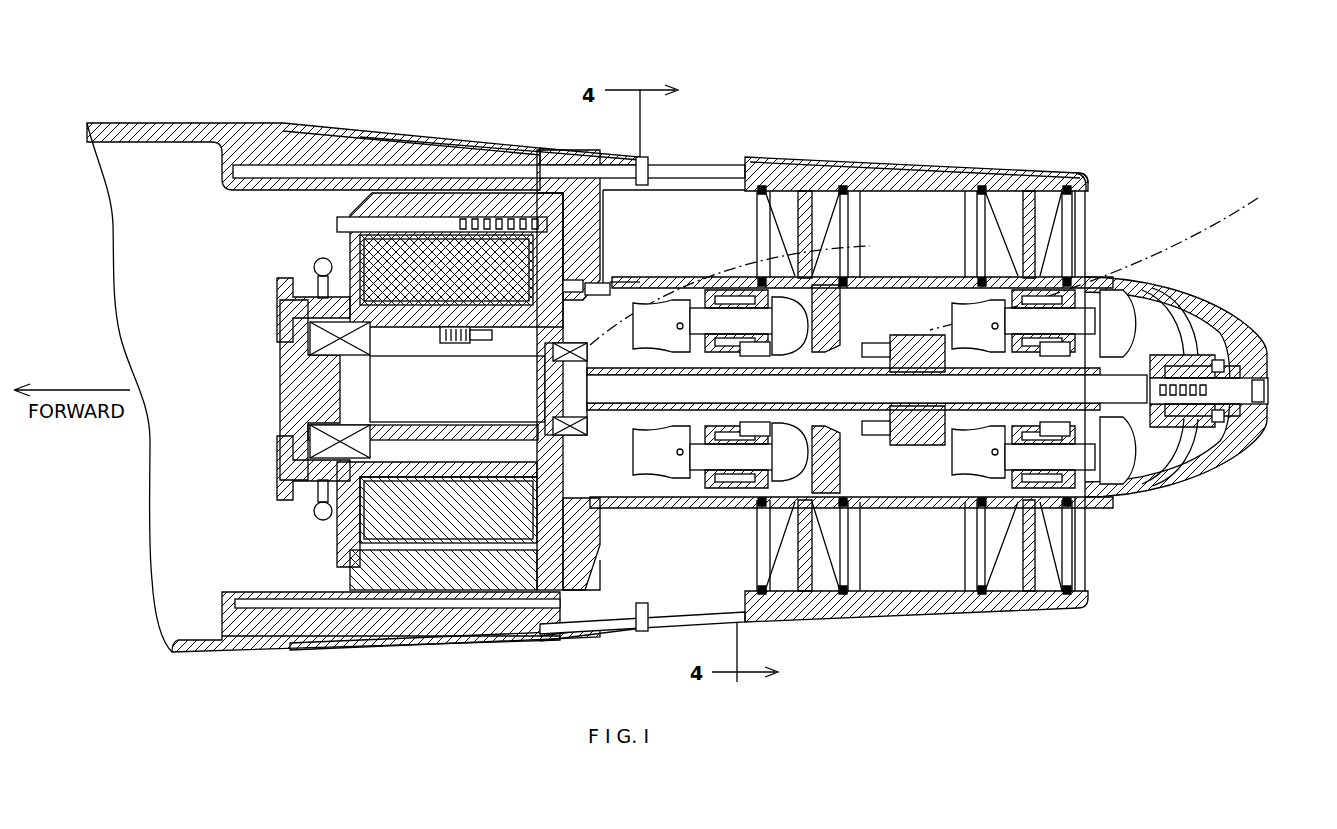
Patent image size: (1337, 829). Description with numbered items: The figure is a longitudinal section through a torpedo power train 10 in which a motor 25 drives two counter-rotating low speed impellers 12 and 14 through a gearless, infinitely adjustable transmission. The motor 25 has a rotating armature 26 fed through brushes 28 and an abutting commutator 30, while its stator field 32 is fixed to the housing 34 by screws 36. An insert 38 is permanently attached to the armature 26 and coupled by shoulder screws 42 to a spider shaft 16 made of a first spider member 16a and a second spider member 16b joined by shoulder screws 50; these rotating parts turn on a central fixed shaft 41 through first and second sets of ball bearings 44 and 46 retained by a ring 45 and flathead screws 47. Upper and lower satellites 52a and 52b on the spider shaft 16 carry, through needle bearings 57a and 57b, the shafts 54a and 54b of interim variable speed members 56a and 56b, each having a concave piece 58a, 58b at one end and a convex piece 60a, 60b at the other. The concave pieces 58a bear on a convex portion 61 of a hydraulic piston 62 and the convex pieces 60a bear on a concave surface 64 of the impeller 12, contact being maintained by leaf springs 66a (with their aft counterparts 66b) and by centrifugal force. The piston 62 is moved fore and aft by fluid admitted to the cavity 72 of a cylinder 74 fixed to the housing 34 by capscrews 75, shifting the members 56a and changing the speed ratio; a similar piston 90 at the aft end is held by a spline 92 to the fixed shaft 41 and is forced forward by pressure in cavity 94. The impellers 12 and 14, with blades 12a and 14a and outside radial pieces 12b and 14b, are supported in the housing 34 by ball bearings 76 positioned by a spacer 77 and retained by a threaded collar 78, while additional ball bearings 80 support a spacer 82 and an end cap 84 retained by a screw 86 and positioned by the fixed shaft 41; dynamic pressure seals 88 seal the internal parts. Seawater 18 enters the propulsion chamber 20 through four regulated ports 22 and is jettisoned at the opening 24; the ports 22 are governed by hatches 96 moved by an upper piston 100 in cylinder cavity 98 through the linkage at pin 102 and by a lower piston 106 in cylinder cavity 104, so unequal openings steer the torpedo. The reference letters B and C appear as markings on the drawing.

The torpedo power train 10 is at (805, 108).
The low speed impeller 12 is at (945, 298).
The blades 12a is at (792, 203).
The outside radial piece 12b is at (845, 605).
The low speed impeller 14 is at (1048, 272).
The blades 14a is at (997, 207).
The outside radial piece 14b is at (1067, 173).
The spider shaft 16 is at (608, 505).
The first spider member 16a is at (455, 460).
The second spider member 16b is at (890, 350).
The seawater 18 is at (1000, 207).
The propulsion chamber 20 is at (613, 203).
The regulated ports 22 is at (682, 172).
The opening 24 is at (1088, 568).
The motor 25 is at (318, 238).
The rotating armature 26 is at (568, 560).
The brushes 28 is at (285, 288).
The commutator 30 is at (313, 505).
The stator field 32 is at (505, 577).
The housing 34 is at (275, 628).
The screws 36 is at (403, 225).
The insert 38 is at (405, 475).
The central fixed shaft 41 is at (300, 407).
The shoulder screws 42 is at (462, 326).
The first set of ball bearings 44 is at (520, 455).
The ring 45 is at (290, 473).
The second set of ball bearings 46 is at (320, 447).
The flathead screws 47 is at (297, 312).
The shoulder screws 50 is at (898, 345).
The upper satellite 52a is at (734, 300).
The lower satellite 52b is at (980, 282).
The shaft 54a is at (690, 312).
The shaft 54b is at (1110, 312).
The interim variable speed member 56a is at (684, 417).
The interim variable speed member 56b is at (1146, 344).
The needle bearings 57a is at (710, 303).
The needle bearings 57b is at (1098, 314).
The concave piece 58a is at (655, 338).
The concave piece 58b is at (966, 352).
The convex piece 60a is at (797, 462).
The convex piece 60b is at (1152, 285).
The convex portion 61 is at (655, 278).
The piston 62 is at (655, 288).
The concave surface 64 is at (826, 331).
The leaf springs 66a is at (745, 356).
The ring 66b is at (1046, 356).
The cavity 72 is at (602, 273).
The cylinder 74 is at (585, 268).
The capscrews 75 is at (625, 272).
The ball bearings 76 is at (772, 170).
The spacer 77 is at (920, 210).
The threaded collar 78 is at (1090, 182).
The ball bearings 80 is at (960, 282).
The spacer 82 is at (920, 510).
The end cap 84 is at (1240, 360).
The screw 86 is at (1266, 391).
The dynamic pressure seals 88 is at (796, 275).
The piston 90 is at (1204, 366).
The spline 92 is at (1228, 366).
The cavity 94 is at (1224, 416).
The hatches 96 is at (532, 141).
The cylinder cavity 98 is at (290, 170).
The piston 100 is at (386, 165).
The pin 102 is at (646, 165).
The cylinder cavity 104 is at (255, 602).
The lower piston 106 is at (397, 603).
The pitch circle B is at (1145, 245).
The pitch circle C is at (838, 256).